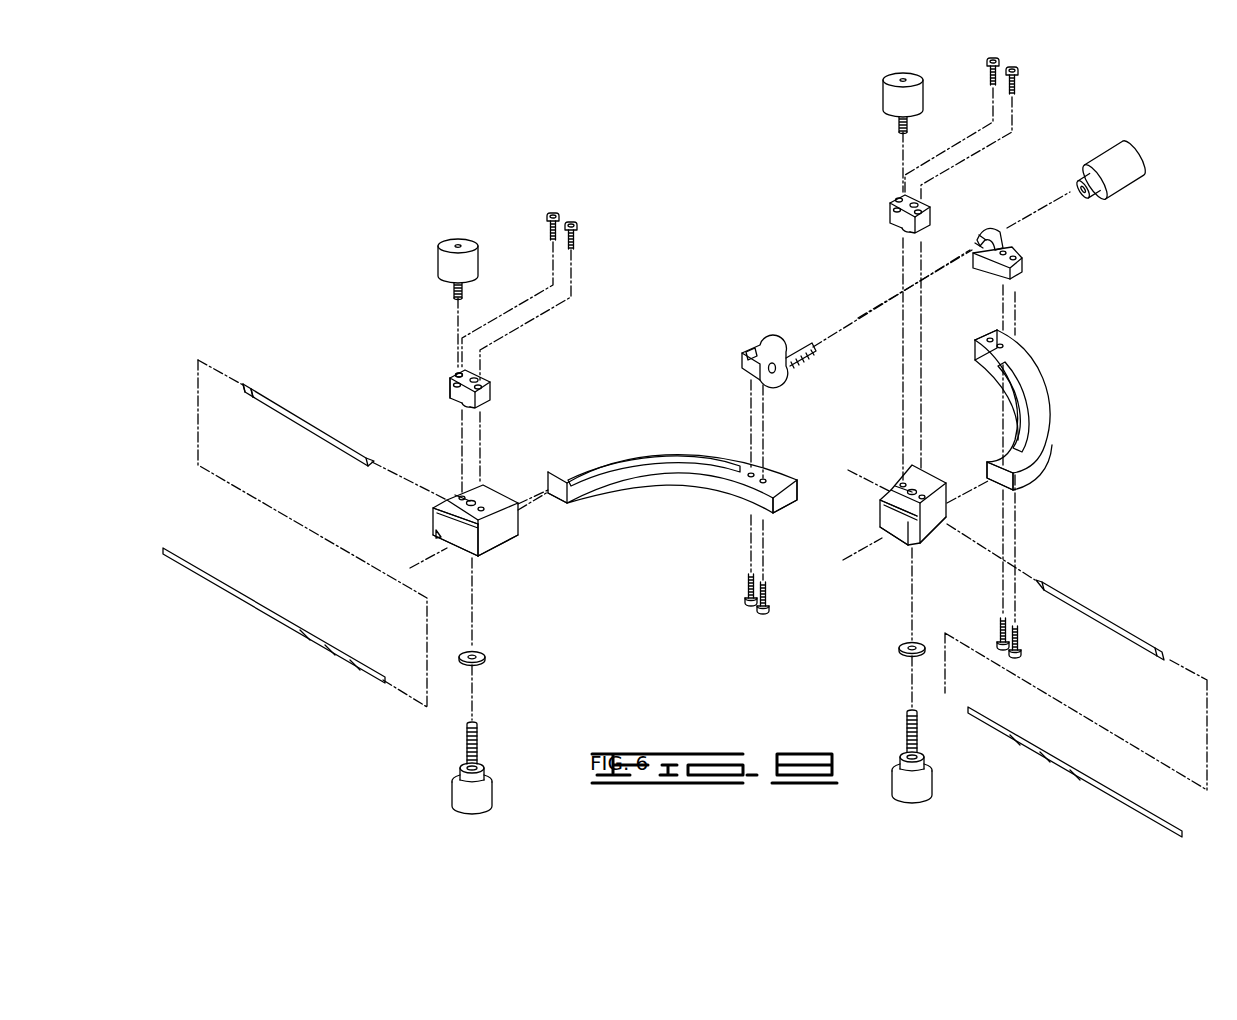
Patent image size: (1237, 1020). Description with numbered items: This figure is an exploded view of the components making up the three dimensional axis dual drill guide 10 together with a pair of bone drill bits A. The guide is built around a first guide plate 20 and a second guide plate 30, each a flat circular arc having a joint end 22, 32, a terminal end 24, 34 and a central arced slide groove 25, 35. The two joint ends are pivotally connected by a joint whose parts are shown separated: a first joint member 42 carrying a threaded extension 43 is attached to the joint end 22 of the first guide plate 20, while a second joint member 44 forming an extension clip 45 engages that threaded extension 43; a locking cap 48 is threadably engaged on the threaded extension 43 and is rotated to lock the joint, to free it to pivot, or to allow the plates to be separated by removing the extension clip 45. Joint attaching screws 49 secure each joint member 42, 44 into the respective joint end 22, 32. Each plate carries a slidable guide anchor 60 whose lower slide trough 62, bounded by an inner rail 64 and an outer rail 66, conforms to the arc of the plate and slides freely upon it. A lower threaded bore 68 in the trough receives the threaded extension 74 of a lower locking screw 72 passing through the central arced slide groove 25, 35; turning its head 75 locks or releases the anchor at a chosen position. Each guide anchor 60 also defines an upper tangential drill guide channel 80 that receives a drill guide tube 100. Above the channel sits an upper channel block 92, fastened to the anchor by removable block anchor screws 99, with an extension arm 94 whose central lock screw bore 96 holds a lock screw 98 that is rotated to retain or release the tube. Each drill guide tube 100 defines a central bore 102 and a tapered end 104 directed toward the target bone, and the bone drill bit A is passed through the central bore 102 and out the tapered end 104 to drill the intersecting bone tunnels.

The dual drill guide 10 is at (648, 155).
The first guide plate 20 is at (633, 447).
The joint end 22 is at (778, 500).
The terminal end 24 is at (575, 493).
The central arced slide groove 25 is at (677, 455).
The second guide plate 30 is at (1050, 378).
The joint end 32 is at (985, 332).
The terminal end 34 is at (1020, 480).
The central arced slide groove 35 is at (1037, 412).
The first joint member 42 is at (770, 345).
The threaded extension 43 is at (805, 356).
The second joint member 44 is at (1022, 272).
The extension clip 45 is at (985, 230).
The locking cap 48 is at (1105, 195).
The joint attaching screws 49 is at (770, 596).
The slidable guide anchor 60 is at (493, 540).
The lower slide trough 62 is at (440, 510).
The inner rail 64 is at (462, 550).
The outer rail 66 is at (436, 535).
The lower threaded bore 68 is at (475, 552).
The lower locking screw 72 is at (486, 770).
The threaded extension 74 is at (480, 735).
The head 75 is at (490, 794).
The drill guide channel 80 is at (452, 494).
The upper channel block 92 is at (488, 394).
The extension arm 94 is at (452, 392).
The central lock screw bore 96 is at (458, 376).
The lock screw 98 is at (447, 262).
The block anchor screws 99 is at (576, 232).
The drill guide tube 100 is at (290, 404).
The central bore 102 is at (244, 380).
The tapered end 104 is at (372, 460).
The bone drill bit A is at (310, 630).